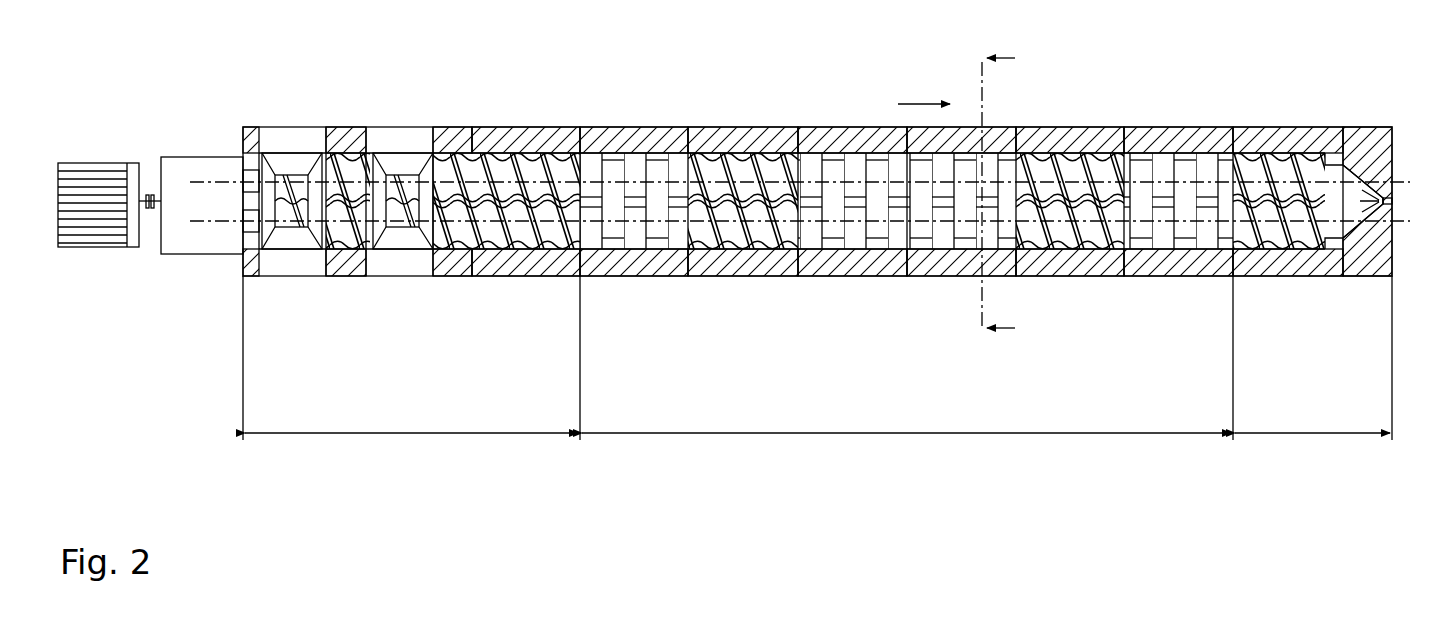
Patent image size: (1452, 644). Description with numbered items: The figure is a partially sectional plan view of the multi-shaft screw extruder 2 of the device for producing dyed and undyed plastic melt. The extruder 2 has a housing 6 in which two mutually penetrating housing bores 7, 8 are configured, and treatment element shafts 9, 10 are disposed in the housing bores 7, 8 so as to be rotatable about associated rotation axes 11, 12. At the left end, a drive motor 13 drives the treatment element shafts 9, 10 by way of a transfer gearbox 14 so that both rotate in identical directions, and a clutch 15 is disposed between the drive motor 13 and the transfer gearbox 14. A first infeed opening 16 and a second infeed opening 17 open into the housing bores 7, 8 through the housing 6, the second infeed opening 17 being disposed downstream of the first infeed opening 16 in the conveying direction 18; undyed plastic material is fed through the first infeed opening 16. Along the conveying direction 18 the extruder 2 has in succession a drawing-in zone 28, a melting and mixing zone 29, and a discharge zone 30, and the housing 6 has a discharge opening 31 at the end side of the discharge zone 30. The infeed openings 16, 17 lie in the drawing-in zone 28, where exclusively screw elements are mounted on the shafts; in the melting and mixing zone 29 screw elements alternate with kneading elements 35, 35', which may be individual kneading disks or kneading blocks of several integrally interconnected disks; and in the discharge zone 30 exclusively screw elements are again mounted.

The multi-shaft screw extruder 2 is at (812, 195).
The housing 6 is at (871, 126).
The housing bore 7 is at (1070, 259).
The housing bore 8 is at (1070, 195).
The treatment element shaft 9 is at (1091, 251).
The treatment element shaft 10 is at (1070, 195).
The rotation axis 11 is at (1157, 223).
The rotation axis 12 is at (1178, 195).
The drive motor 13 is at (86, 165).
The transfer gearbox 14 is at (186, 165).
The clutch 15 is at (150, 196).
The first infeed opening 16 is at (284, 175).
The second infeed opening 17 is at (411, 175).
The conveying direction 18 is at (924, 102).
The drawing-in zone 28 is at (411, 358).
The melting and mixing zone 29 is at (907, 358).
The discharge zone 30 is at (1313, 358).
The discharge opening 31 is at (1392, 201).
The kneading element 35 is at (634, 259).
The kneading element 35' is at (634, 195).